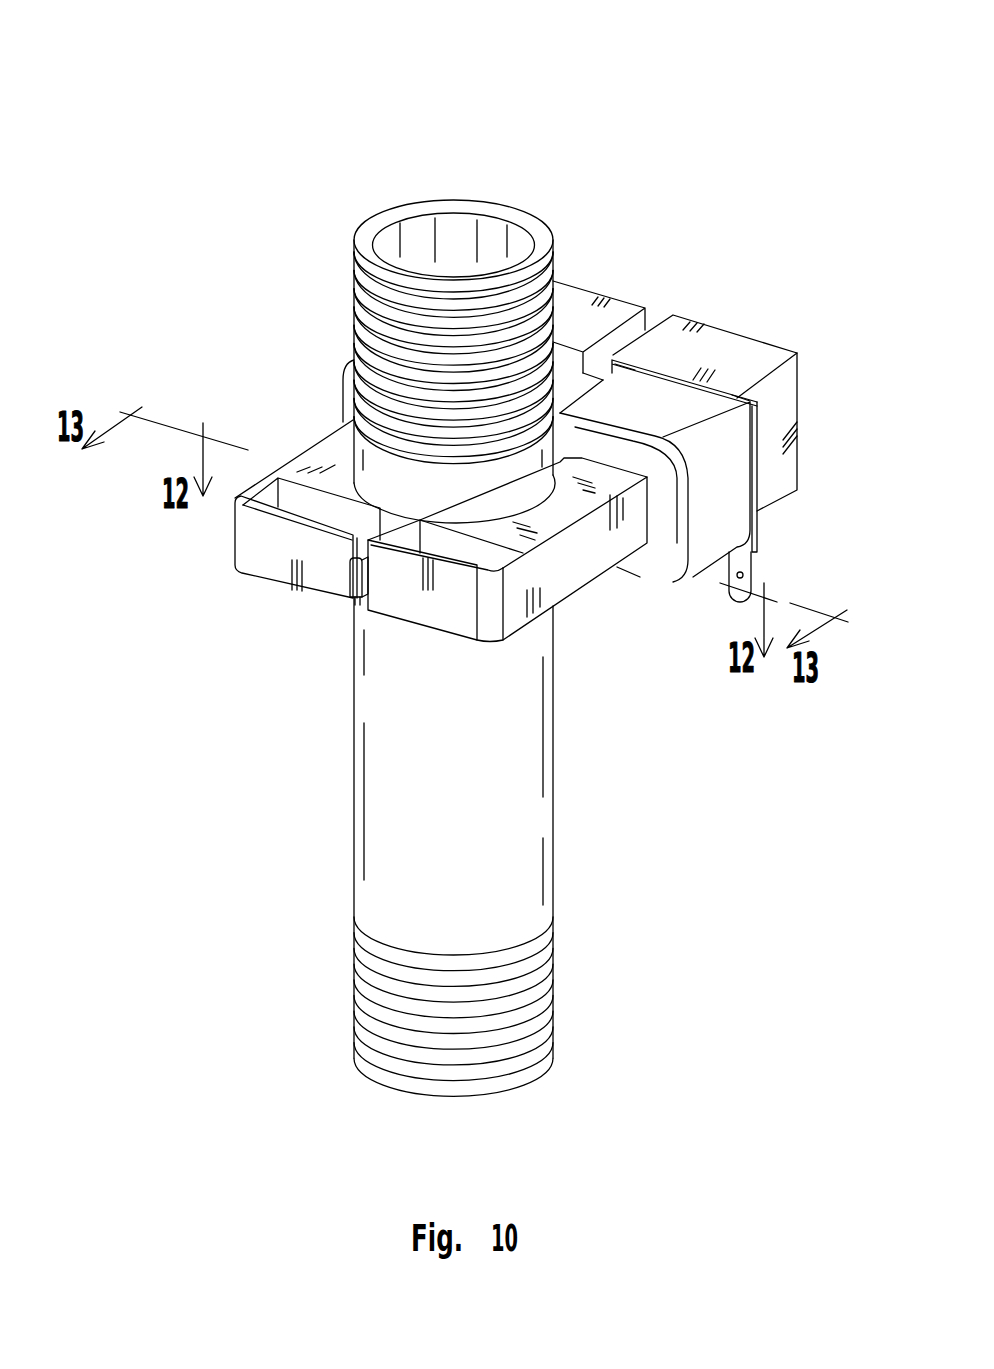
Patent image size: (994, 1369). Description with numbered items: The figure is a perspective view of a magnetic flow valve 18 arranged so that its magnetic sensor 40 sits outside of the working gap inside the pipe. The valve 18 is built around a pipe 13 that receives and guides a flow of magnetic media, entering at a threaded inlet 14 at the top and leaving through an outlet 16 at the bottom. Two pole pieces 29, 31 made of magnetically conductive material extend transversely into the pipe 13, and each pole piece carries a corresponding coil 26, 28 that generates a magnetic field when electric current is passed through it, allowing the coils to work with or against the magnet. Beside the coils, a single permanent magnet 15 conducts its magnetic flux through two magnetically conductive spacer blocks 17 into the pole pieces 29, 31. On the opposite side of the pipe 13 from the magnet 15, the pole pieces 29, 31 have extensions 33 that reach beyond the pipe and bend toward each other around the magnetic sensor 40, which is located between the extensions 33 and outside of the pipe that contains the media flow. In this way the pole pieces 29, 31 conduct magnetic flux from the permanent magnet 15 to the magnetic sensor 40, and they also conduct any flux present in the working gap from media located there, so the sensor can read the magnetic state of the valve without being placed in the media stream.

The valve 18 is at (297, 134).
The inlet 14 is at (455, 223).
The coil 26 is at (342, 383).
The pipe 13 is at (535, 824).
The outlet 16 is at (498, 1093).
The pole piece 29 is at (327, 457).
The extension 33 is at (282, 557).
The magnetic sensor 40 is at (350, 578).
The pole piece 31 is at (548, 578).
The permanent magnet 15 is at (603, 367).
The spacer block 17 is at (577, 310).
The coil 28 is at (662, 567).